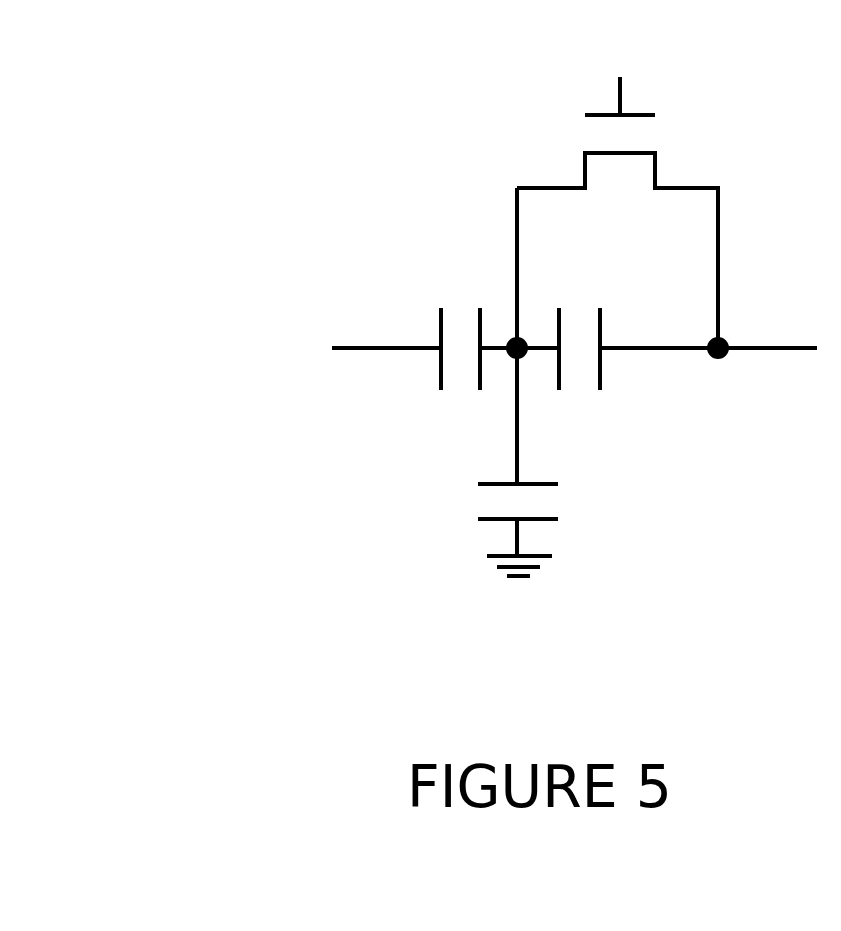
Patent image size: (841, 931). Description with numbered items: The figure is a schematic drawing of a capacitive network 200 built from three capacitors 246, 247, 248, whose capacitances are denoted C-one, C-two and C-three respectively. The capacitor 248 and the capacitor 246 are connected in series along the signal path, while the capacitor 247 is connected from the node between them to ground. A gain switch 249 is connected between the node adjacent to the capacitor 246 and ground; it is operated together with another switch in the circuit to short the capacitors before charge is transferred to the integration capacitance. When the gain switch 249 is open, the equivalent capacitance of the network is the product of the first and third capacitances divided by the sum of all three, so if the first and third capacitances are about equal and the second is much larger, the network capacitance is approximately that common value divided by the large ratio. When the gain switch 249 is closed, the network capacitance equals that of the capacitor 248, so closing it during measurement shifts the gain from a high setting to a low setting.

The capacitive network 200 is at (258, 131).
The gain switch 249 is at (583, 155).
The capacitor 248 is at (440, 308).
The capacitor 247 is at (505, 484).
The capacitor 246 is at (603, 331).